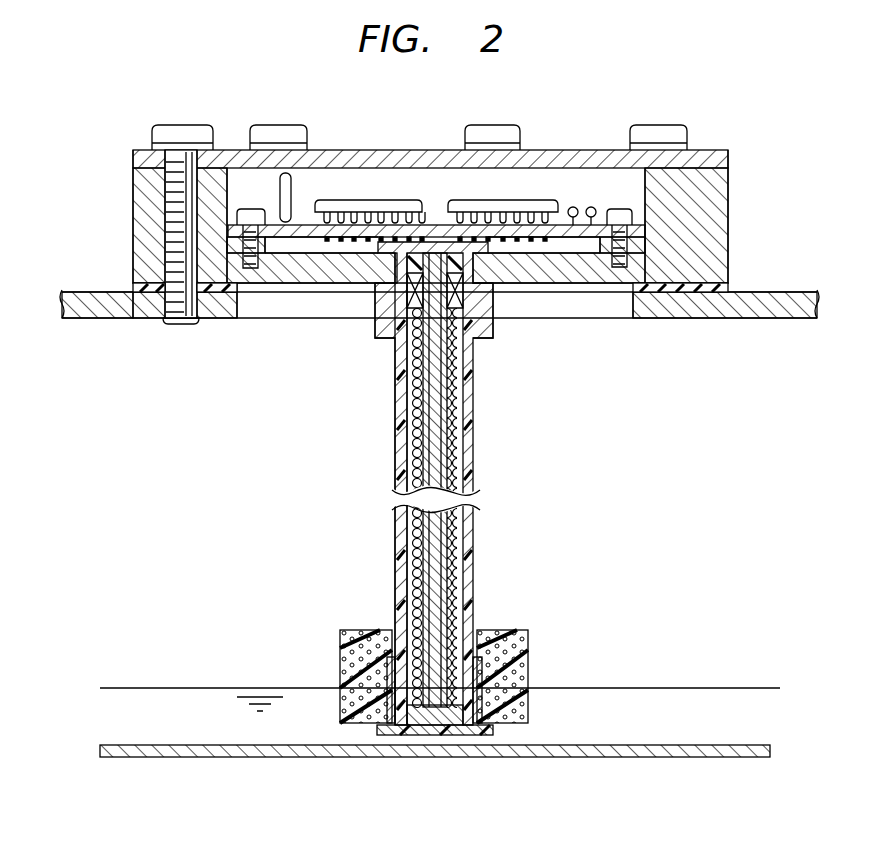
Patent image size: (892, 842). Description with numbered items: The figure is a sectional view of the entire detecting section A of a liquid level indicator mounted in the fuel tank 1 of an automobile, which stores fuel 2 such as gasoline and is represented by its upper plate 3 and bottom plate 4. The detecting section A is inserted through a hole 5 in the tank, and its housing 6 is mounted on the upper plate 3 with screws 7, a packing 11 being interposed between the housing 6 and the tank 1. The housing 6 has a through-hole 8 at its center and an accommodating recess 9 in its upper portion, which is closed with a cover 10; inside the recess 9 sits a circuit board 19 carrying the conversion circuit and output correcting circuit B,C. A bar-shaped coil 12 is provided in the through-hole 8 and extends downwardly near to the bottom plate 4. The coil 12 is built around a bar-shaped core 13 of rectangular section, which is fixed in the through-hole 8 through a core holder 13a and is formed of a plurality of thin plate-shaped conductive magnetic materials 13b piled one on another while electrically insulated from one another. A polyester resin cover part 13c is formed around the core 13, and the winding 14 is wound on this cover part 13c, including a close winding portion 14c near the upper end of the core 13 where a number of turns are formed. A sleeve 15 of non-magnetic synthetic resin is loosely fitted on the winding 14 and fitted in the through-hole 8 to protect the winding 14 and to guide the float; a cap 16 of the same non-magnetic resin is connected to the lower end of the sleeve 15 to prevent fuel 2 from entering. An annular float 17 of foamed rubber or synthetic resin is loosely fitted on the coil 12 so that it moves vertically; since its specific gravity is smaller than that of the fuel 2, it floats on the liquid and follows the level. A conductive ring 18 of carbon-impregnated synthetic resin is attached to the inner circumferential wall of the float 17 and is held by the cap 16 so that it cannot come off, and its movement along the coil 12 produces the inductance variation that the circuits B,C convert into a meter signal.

The fuel tank 1 is at (787, 292).
The fuel 2 is at (218, 688).
The upper plate 3 is at (748, 300).
The bottom plate 4 is at (660, 745).
The hole 5 is at (633, 300).
The housing 6 is at (725, 185).
The screws 7 is at (183, 128).
The through-hole 8 is at (400, 345).
The accommodating recess 9 is at (645, 190).
The cover 10 is at (422, 150).
The packing 11 is at (133, 290).
The bar-shaped coil 12 is at (456, 367).
The bar-shaped core 13 is at (440, 400).
The core holder 13a is at (420, 230).
The plate-shaped conductive magnetic materials 13b is at (437, 455).
The cover part 13c is at (445, 478).
The winding 14 is at (410, 428).
The close winding portion 14c is at (462, 302).
The sleeve 15 is at (397, 472).
The cap 16 is at (445, 735).
The float 17 is at (500, 632).
The conductive ring 18 is at (483, 708).
The circuit board 19 is at (300, 221).
The detecting section A is at (528, 435).
The conversion circuit and output correcting circuit B,C is at (497, 195).